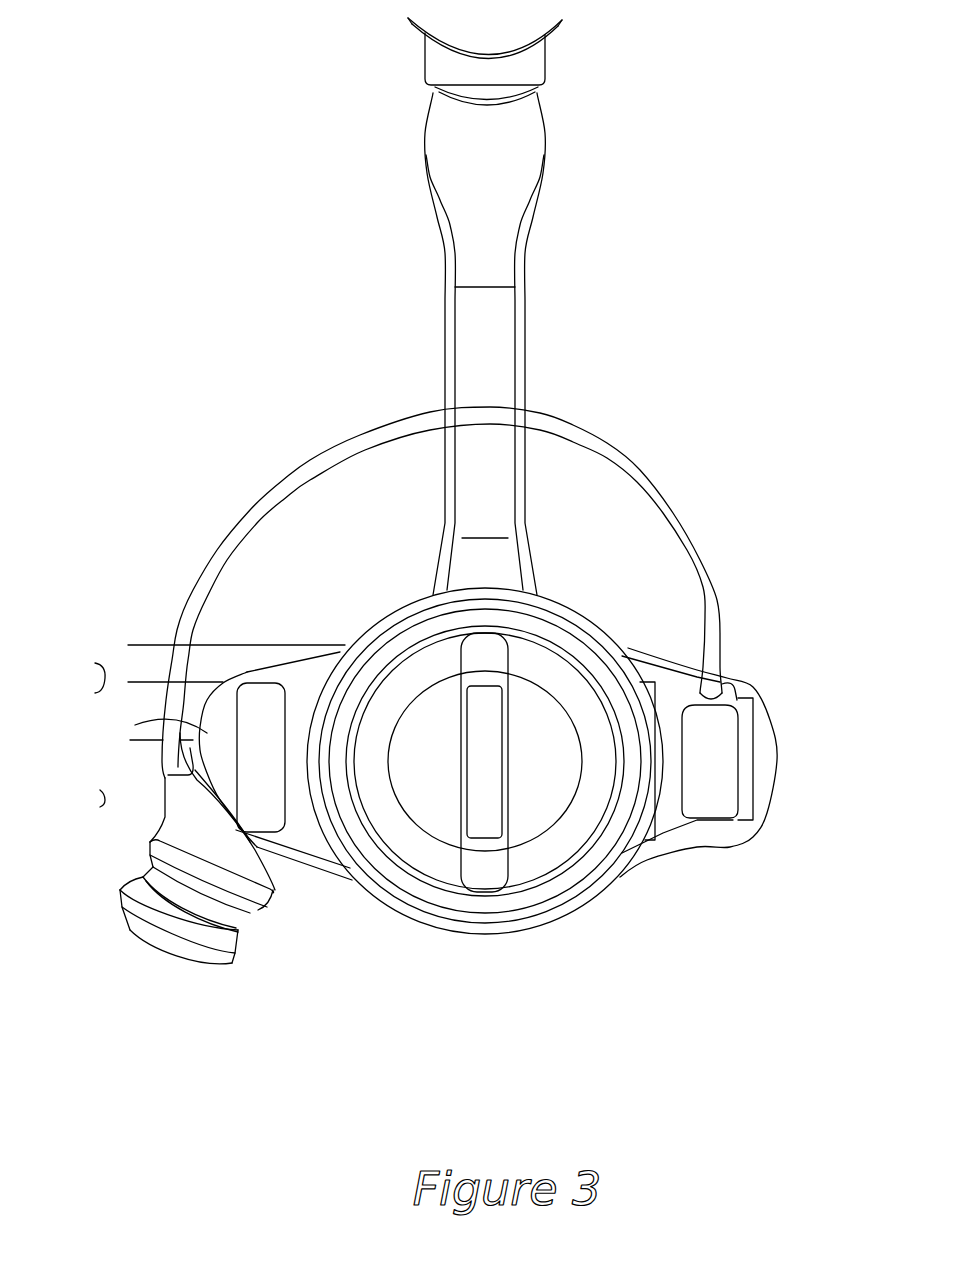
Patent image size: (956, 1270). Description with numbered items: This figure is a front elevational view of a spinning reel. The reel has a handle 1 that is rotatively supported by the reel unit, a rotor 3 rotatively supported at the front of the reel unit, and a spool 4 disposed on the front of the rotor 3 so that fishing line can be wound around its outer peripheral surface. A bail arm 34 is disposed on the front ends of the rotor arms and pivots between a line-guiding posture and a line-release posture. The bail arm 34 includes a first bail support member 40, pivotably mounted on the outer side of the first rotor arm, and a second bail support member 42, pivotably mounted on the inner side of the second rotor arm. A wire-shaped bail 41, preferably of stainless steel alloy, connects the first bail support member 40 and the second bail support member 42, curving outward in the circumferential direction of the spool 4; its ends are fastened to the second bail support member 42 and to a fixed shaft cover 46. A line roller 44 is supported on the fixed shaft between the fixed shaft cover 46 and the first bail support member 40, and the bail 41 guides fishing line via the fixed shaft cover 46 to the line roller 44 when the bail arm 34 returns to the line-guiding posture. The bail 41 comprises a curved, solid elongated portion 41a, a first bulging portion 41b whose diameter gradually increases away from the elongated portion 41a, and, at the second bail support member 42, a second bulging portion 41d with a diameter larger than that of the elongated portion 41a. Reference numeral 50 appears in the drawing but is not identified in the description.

The handle 1 is at (145, 645).
The rotor 3 is at (730, 845).
The spool 4 is at (423, 893).
The bail arm 34 is at (167, 960).
The first bail support member 40 is at (137, 630).
The bail 41 is at (431, 642).
The elongated portion 41a is at (262, 510).
The first bulging portion 41b is at (178, 766).
The second bulging portion 41d is at (713, 693).
The second bail support member 42 is at (717, 747).
The line roller 44 is at (150, 875).
The fixed shaft cover 46 is at (172, 815).
The fastener 50 is at (160, 750).